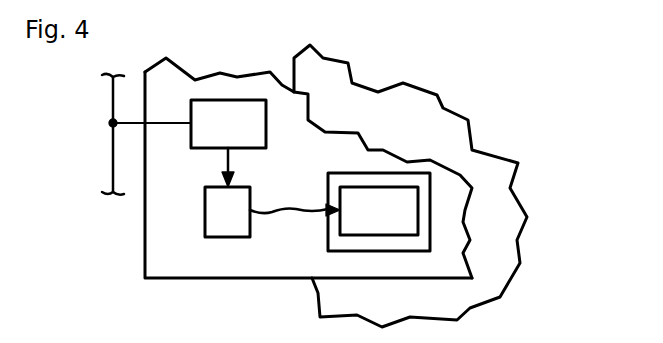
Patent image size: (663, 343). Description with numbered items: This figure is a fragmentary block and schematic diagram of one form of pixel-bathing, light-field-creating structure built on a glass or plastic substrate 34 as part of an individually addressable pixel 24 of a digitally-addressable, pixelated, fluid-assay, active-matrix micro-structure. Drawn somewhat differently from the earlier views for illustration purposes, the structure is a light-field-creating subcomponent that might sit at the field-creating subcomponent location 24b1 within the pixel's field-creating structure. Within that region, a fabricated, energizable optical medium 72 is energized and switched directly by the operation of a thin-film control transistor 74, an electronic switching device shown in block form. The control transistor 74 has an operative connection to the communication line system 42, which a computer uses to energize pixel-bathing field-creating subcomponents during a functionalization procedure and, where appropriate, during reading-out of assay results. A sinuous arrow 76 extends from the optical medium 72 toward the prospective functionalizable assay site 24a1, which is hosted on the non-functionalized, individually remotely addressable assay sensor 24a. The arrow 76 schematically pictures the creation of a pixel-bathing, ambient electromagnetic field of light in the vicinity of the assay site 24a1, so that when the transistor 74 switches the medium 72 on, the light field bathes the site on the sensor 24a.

The substrate 34 is at (427, 122).
The pixel 24 is at (383, 152).
The field-creating subcomponent 24b1 is at (178, 212).
The line system 42 is at (134, 125).
The control transistor 74 is at (213, 108).
The optical medium 72 is at (230, 237).
The sinuous arrow 76 is at (268, 213).
The assay sensor 24a is at (432, 182).
The assay site 24a1 is at (418, 217).